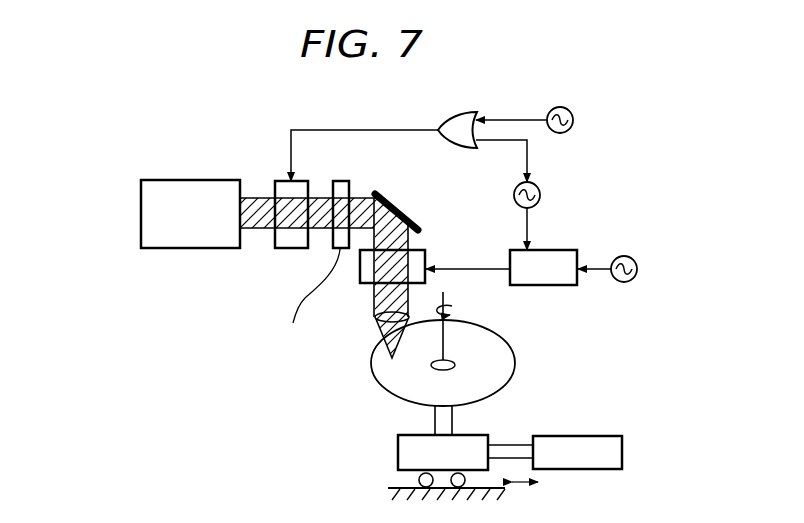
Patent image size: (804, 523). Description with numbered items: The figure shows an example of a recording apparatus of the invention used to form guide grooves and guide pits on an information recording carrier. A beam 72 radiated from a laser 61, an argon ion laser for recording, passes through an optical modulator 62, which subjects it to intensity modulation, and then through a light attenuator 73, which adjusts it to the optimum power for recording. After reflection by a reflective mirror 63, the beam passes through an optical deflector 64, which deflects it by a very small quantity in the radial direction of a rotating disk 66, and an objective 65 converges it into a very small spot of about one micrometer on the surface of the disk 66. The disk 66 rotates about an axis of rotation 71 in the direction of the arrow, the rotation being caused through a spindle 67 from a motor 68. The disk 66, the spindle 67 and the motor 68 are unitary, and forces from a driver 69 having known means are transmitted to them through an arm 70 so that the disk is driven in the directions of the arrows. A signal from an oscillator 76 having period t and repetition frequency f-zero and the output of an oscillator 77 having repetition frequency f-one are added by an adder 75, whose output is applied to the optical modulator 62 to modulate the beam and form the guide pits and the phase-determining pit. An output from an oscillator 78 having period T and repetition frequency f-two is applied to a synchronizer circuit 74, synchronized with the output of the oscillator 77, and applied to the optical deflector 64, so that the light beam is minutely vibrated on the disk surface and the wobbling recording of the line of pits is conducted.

The laser 61 is at (189, 180).
The optical modulator 62 is at (300, 181).
The reflective mirror 63 is at (396, 206).
The optical deflector 64 is at (425, 258).
The objective 65 is at (375, 321).
The disk 66 is at (515, 364).
The spindle 67 is at (453, 420).
The motor 68 is at (397, 455).
The driver 69 is at (585, 436).
The arm 70 is at (513, 441).
The axis of rotation 71 is at (446, 297).
The beam 72 is at (291, 249).
The light attenuator 73 is at (347, 181).
The synchronizer circuit 74 is at (562, 250).
The adder 75 is at (459, 112).
The oscillator 76 is at (569, 110).
The oscillator 77 is at (538, 188).
The oscillator 78 is at (624, 256).